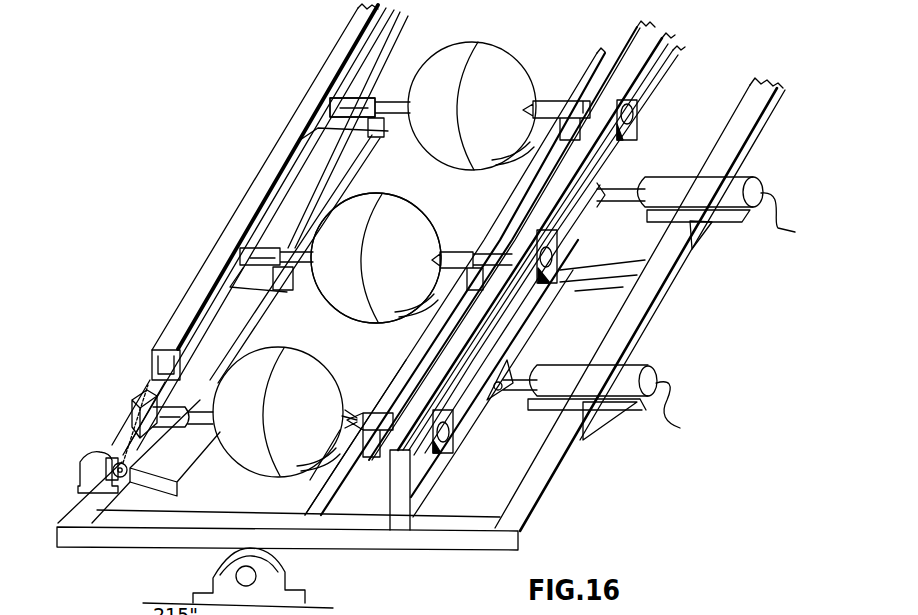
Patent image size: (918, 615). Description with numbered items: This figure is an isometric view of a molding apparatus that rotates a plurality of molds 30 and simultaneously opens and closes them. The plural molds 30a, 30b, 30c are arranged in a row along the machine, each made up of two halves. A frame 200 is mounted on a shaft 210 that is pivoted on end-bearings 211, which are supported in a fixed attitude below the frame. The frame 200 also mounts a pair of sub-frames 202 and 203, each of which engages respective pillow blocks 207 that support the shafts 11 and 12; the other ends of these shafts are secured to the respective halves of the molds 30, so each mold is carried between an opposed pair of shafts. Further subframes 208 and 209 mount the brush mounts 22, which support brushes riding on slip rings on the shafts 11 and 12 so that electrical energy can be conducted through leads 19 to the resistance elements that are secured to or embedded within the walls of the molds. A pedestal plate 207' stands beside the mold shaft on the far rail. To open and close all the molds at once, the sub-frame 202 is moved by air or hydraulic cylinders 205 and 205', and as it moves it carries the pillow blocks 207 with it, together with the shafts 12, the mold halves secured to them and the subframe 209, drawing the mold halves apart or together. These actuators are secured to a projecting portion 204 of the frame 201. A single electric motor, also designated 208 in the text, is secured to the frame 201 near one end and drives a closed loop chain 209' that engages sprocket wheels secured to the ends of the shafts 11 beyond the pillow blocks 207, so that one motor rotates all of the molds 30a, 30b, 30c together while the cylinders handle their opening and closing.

The shaft 11 is at (330, 100).
The shaft 12 is at (583, 107).
The leads 19 is at (255, 280).
The brush mounts 22 is at (380, 133).
The molds 30 is at (415, 207).
The mold 30a is at (294, 441).
The mold 30b is at (400, 259).
The mold 30c is at (500, 103).
The frame 200 is at (131, 556).
The frame 201 is at (358, 547).
The sub-frame 202 is at (182, 302).
The sub-frame 203 is at (640, 42).
The projecting portion 204 is at (520, 537).
The air or hydraulic cylinder 205 is at (586, 383).
The air or hydraulic cylinder 205' is at (699, 188).
The pillow block 207 is at (379, 297).
The spindle pedestal plate 207' is at (477, 431).
The subframe 208 is at (273, 322).
The subframe 209 is at (357, 430).
The closed loop chain 209' is at (102, 424).
The shaft 210 is at (250, 575).
The end-bearings 211 is at (300, 600).